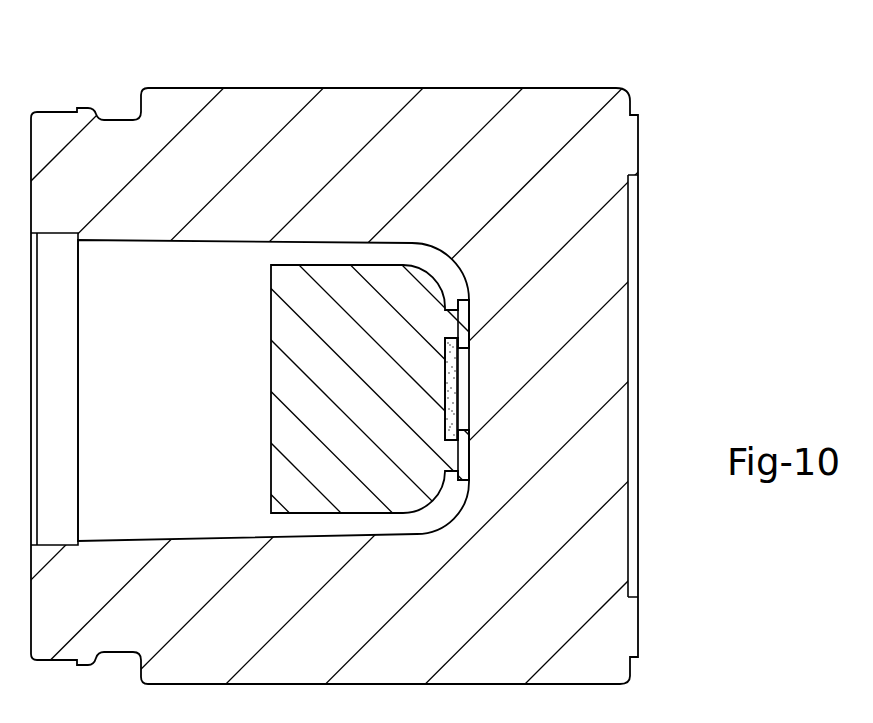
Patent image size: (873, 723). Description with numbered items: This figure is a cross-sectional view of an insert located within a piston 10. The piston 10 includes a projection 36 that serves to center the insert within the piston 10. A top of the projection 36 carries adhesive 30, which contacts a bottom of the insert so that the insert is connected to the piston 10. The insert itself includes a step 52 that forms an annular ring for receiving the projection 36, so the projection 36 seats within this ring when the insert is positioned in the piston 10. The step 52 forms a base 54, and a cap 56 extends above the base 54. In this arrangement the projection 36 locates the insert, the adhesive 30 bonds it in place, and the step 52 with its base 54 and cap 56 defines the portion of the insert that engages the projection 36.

The piston 10 is at (665, 68).
The adhesive 30 is at (451, 386).
The projection 36 is at (457, 417).
The step 52 is at (457, 472).
The base 54 is at (463, 294).
The cap 56 is at (297, 382).